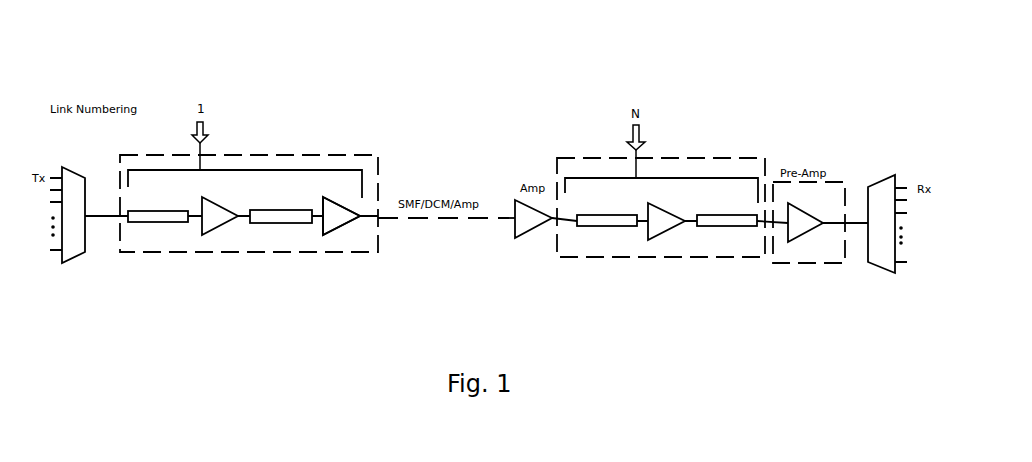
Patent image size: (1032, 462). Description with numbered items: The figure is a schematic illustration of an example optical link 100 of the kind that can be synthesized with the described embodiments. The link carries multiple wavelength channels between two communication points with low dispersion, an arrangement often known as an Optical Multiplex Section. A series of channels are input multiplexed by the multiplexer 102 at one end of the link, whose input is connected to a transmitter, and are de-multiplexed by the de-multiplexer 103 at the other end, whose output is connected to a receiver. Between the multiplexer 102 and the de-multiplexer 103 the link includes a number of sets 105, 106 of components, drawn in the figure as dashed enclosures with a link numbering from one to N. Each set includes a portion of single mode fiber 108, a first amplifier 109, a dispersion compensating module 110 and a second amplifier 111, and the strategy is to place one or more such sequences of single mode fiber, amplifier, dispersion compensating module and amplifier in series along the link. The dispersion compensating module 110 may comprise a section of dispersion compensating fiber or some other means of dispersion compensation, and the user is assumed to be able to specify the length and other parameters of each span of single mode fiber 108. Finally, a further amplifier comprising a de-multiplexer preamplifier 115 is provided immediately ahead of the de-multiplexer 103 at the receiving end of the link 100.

The optical link 100 is at (708, 80).
The multiplexer 102 is at (77, 263).
The de-multiplexer 103 is at (883, 175).
The set of components 105 is at (284, 196).
The set of components 106 is at (623, 257).
The single mode fiber 108 is at (180, 222).
The first amplifier 109 is at (220, 233).
The dispersion compensating module 110 is at (288, 223).
The second amplifier 111 is at (353, 230).
The de-multiplexer preamplifier 115 is at (797, 242).